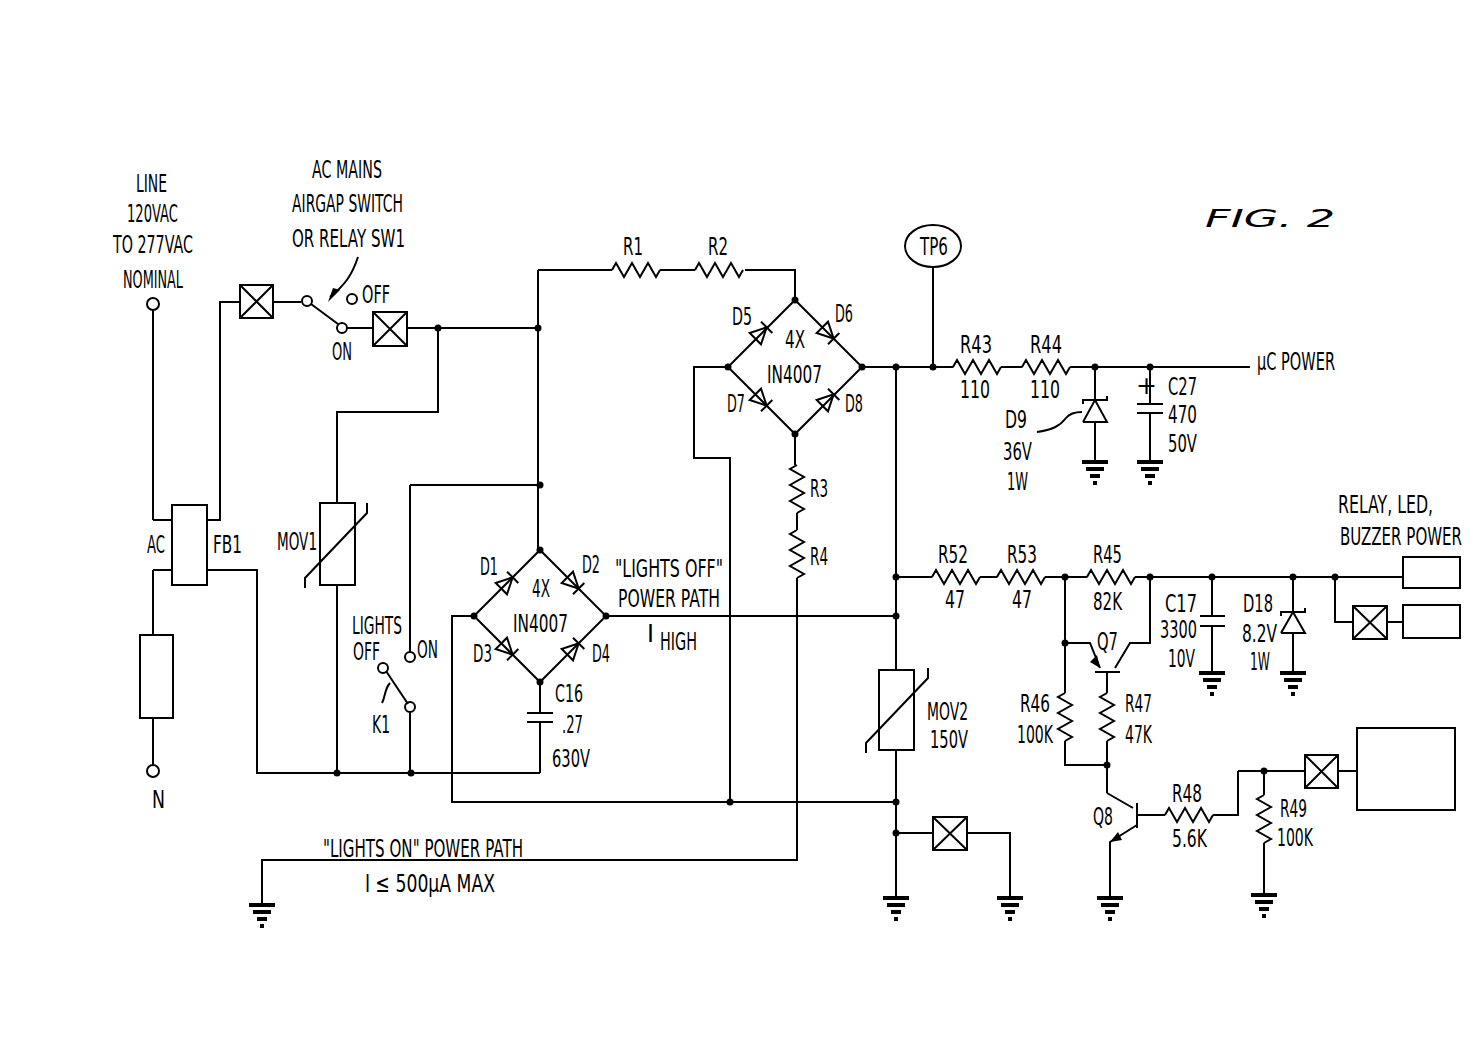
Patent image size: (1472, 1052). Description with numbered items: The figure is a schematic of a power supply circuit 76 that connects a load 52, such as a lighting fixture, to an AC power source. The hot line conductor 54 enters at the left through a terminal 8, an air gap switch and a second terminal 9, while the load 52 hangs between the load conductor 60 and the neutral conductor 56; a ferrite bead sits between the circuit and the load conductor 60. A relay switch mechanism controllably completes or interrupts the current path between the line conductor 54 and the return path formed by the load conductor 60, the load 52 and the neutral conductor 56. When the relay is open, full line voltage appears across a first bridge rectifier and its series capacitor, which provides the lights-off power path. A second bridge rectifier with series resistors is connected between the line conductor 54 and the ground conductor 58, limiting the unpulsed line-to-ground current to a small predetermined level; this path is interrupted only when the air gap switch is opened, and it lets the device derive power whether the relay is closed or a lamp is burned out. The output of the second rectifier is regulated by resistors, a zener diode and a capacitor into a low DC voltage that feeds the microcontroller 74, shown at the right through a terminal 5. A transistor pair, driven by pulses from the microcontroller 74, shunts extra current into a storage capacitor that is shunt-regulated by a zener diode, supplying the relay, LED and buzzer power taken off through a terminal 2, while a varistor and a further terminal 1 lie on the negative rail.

The connector terminal 1 is at (959, 868).
The connector terminal 2 is at (1369, 625).
The connector terminal 5 is at (1297, 756).
The line terminal 8 is at (256, 320).
The switched line terminal 9 is at (390, 347).
The load 52 is at (173, 708).
The line conductor 54 is at (155, 358).
The neutral conductor 56 is at (158, 745).
The ground conductor 58 is at (292, 860).
The load conductor 60 is at (157, 598).
The microcontroller 74 is at (1440, 727).
The power supply circuit 76 is at (1028, 259).